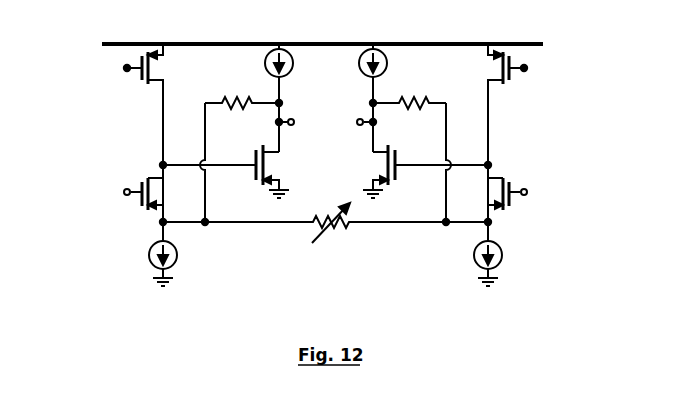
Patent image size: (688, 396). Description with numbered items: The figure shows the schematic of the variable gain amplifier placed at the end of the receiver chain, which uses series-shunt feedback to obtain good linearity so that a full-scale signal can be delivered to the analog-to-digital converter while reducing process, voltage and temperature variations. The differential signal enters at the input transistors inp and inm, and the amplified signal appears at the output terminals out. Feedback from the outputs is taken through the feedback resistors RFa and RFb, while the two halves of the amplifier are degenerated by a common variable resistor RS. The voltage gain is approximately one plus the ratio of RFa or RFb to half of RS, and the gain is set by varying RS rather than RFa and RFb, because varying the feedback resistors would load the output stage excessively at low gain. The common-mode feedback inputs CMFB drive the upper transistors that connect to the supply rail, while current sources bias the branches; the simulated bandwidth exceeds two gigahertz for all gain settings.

The feedback resistor RFa is at (242, 93).
The feedback resistor RFb is at (409, 93).
The source resistor RS is at (325, 235).
The common-mode feedback input transistors CMFB is at (317, 68).
The differential output terminals out+ / out- out is at (326, 128).
The input transistor in+ inp is at (129, 190).
The input transistor in- inm is at (519, 190).